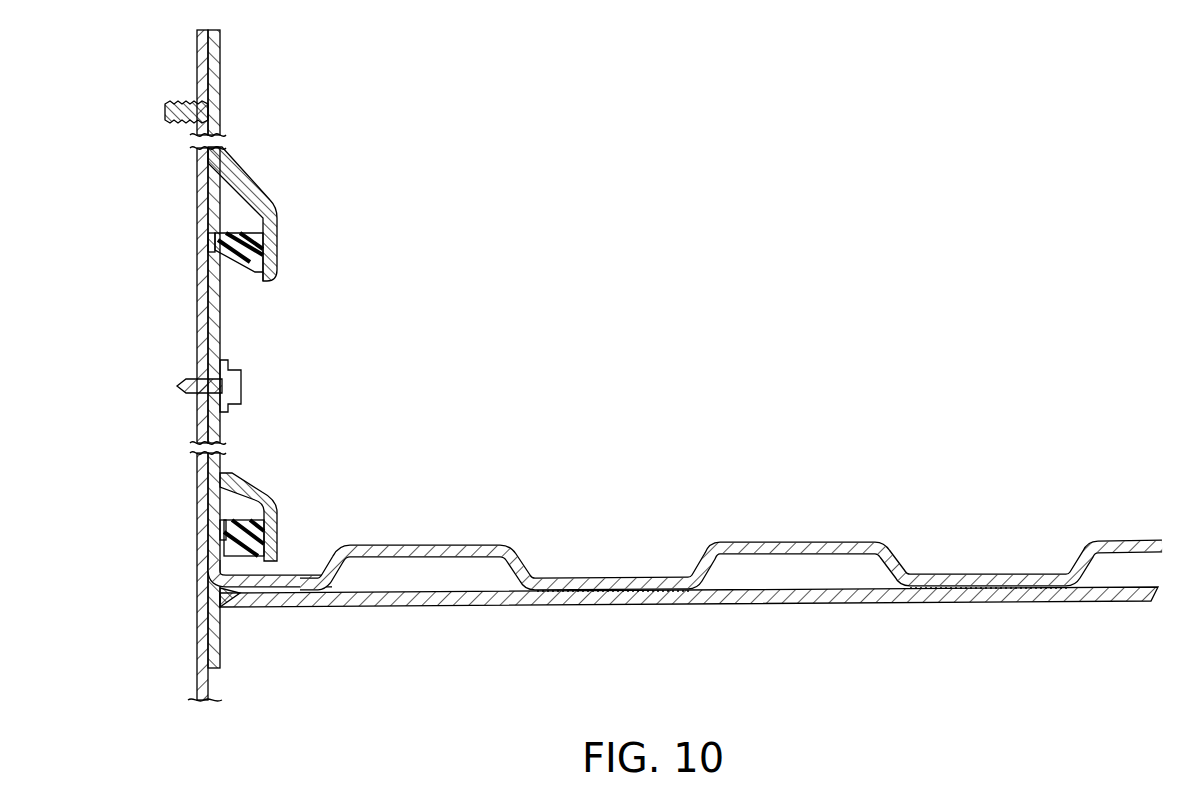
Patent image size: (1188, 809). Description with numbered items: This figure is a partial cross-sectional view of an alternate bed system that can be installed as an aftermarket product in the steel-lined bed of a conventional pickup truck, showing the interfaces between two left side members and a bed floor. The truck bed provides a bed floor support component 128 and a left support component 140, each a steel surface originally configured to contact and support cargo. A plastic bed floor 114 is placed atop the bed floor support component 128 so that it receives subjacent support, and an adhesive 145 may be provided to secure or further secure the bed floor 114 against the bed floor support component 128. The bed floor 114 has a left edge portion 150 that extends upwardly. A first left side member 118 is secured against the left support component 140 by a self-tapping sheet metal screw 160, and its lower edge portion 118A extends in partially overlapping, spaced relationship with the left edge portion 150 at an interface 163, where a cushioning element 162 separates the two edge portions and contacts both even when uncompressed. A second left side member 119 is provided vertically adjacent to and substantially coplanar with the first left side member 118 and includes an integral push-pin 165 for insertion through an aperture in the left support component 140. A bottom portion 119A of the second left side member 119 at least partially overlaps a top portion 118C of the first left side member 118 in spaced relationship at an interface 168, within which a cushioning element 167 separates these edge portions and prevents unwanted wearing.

The left support component 140 is at (188, 67).
The second left side member 119 is at (250, 62).
The integral push-pin 165 is at (168, 109).
The top portion 118C is at (219, 229).
The bottom portion 119A is at (282, 244).
The cushioning element 167 is at (247, 274).
The interface 168 is at (240, 290).
The first left side member 118 is at (268, 340).
The self-tapping sheet metal screw 160 is at (241, 386).
The lower edge portion 118A is at (278, 494).
The left edge portion 150 is at (218, 519).
The cushioning element 162 is at (250, 566).
The bed floor 114 is at (491, 524).
The adhesive 145 is at (538, 610).
The interface 163 is at (237, 600).
The bed floor support component 128 is at (447, 622).